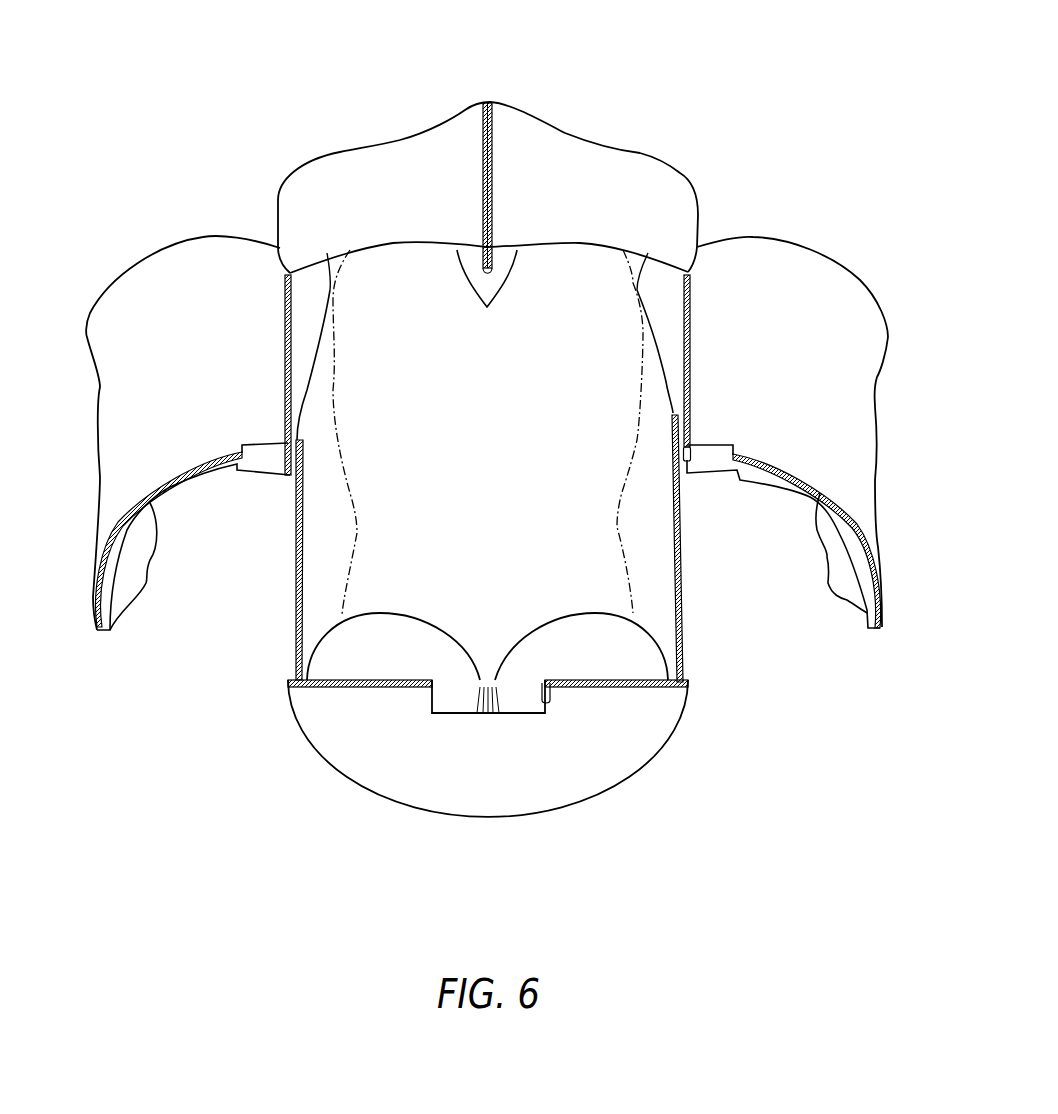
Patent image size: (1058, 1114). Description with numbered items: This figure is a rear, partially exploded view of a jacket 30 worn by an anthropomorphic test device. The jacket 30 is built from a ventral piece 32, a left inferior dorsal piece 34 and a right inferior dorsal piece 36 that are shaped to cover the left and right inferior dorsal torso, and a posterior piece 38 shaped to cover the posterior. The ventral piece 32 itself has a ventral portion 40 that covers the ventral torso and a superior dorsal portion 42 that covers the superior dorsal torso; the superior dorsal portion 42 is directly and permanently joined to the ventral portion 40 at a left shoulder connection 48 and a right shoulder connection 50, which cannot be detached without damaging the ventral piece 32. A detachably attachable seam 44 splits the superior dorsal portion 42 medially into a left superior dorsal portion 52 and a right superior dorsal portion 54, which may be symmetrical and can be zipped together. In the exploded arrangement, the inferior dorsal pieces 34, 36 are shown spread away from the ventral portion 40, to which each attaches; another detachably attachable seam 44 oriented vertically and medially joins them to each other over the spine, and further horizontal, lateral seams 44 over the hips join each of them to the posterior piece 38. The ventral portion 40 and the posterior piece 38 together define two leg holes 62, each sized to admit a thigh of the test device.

The jacket 30 is at (705, 62).
The ventral piece 32 is at (645, 155).
The left inferior dorsal piece 34 is at (87, 337).
The right inferior dorsal piece 36 is at (889, 337).
The posterior piece 38 is at (590, 800).
The ventral portion 40 is at (300, 583).
The superior dorsal portion 42 is at (487, 309).
The detachably attachable seam 44 is at (482, 143).
The left shoulder connection 48 is at (340, 152).
The right shoulder connection 50 is at (593, 143).
The left superior dorsal portion 52 is at (393, 247).
The right superior dorsal portion 54 is at (582, 247).
The leg hole 62 is at (393, 613).